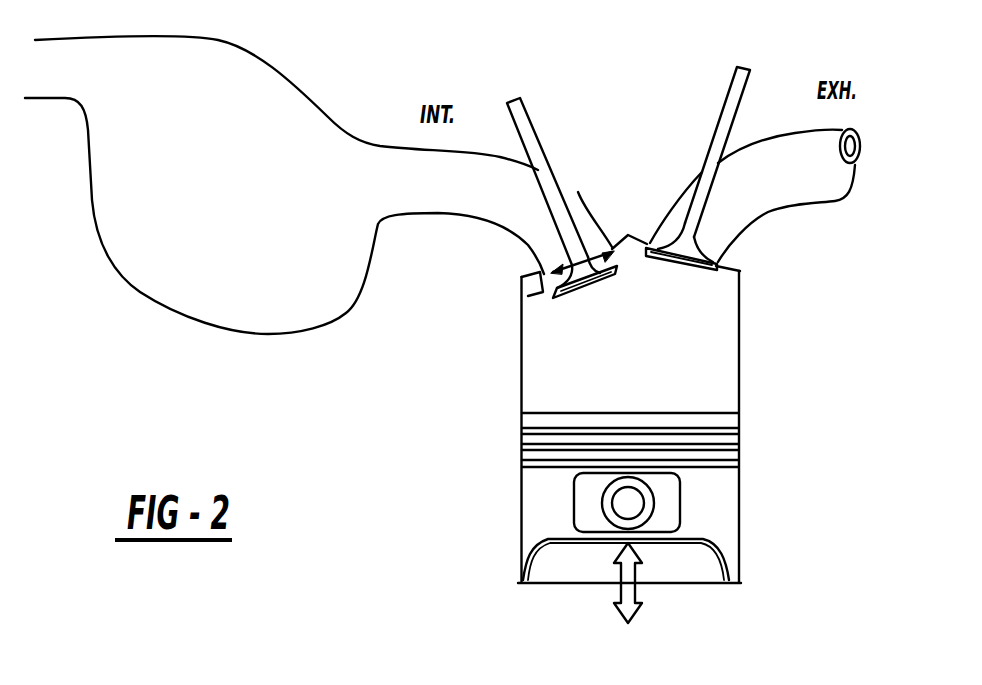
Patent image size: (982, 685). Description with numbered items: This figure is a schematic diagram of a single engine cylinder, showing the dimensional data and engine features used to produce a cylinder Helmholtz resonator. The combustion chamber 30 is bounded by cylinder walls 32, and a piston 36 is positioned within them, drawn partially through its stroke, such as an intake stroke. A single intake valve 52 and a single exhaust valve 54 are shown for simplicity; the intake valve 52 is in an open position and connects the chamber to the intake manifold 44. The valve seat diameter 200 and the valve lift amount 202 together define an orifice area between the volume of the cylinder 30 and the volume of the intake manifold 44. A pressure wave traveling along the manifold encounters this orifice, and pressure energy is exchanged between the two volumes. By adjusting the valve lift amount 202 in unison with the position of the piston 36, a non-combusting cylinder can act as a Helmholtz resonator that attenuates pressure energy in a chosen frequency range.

The intake manifold 44 is at (252, 214).
The intake valve 52 is at (540, 146).
The exhaust valve 54 is at (716, 130).
The valve seat diameter 200 is at (611, 252).
The valve lift amount 202 is at (536, 279).
The combustion chamber 30 is at (653, 353).
The cylinder walls 32 is at (740, 354).
The piston 36 is at (710, 512).